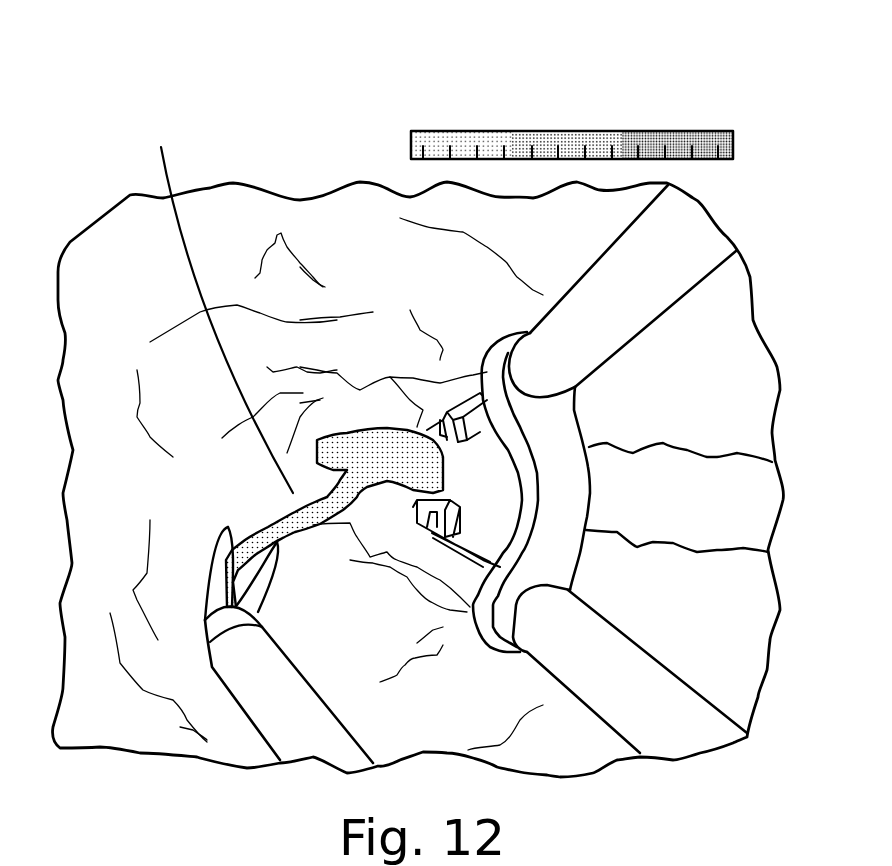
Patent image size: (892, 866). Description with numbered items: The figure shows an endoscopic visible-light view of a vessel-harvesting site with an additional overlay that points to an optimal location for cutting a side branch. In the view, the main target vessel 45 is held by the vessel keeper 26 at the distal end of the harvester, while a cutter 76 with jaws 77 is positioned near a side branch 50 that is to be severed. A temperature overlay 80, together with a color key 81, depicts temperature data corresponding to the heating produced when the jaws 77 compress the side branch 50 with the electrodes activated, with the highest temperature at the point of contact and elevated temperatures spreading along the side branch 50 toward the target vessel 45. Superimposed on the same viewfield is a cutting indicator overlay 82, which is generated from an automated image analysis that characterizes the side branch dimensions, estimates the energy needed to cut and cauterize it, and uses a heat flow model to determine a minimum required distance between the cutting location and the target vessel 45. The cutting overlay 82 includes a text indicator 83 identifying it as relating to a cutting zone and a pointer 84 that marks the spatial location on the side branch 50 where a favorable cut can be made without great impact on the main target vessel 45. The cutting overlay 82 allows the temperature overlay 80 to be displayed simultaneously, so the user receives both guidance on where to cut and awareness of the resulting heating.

The cutting indicator overlay 82 is at (227, 67).
The text indicator 83 is at (128, 132).
The color key 81 is at (430, 131).
The temperature overlay 80 is at (373, 425).
The vessel keeper 26 is at (582, 403).
The target vessel 45 is at (745, 502).
The pointer 84 is at (288, 500).
The jaws 77 is at (203, 587).
The side branch 50 is at (293, 532).
The cutter 76 is at (252, 730).